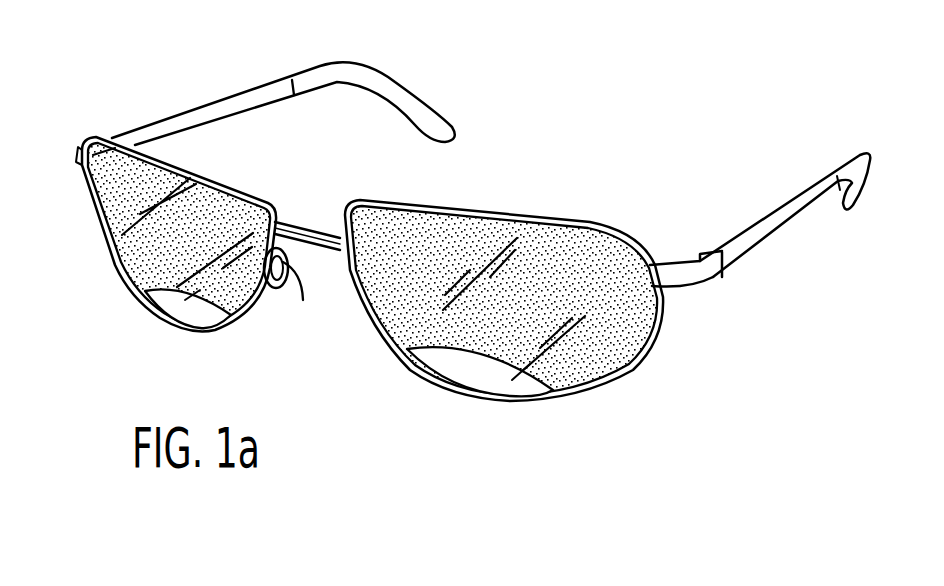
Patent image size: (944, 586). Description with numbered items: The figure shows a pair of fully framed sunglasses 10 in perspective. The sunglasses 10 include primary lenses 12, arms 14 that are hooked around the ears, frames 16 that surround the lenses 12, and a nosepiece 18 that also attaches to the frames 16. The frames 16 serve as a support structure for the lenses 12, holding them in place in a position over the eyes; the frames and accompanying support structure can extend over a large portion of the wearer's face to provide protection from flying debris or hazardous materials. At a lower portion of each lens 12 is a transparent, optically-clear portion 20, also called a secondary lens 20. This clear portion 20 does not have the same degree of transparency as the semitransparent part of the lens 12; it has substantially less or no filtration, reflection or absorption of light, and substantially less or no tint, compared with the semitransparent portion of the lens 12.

The sunglasses 10 is at (375, 461).
The primary lens 12 is at (117, 223).
The arm 14 is at (225, 97).
The frame 16 is at (504, 202).
The nosepiece 18 is at (283, 272).
The clear portion 20 is at (160, 302).